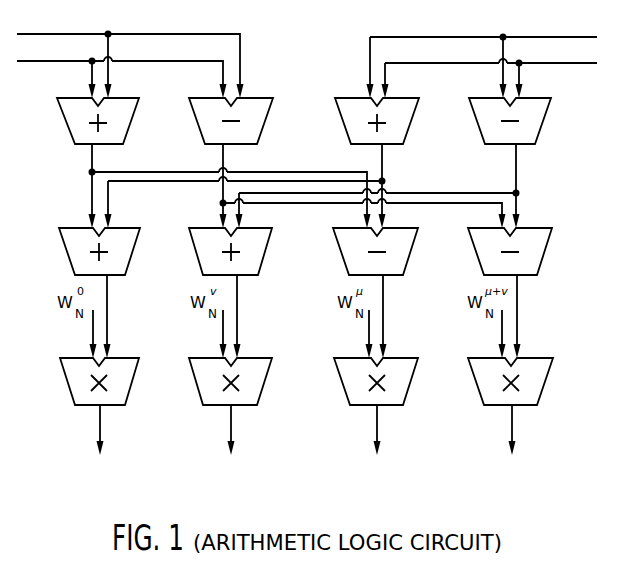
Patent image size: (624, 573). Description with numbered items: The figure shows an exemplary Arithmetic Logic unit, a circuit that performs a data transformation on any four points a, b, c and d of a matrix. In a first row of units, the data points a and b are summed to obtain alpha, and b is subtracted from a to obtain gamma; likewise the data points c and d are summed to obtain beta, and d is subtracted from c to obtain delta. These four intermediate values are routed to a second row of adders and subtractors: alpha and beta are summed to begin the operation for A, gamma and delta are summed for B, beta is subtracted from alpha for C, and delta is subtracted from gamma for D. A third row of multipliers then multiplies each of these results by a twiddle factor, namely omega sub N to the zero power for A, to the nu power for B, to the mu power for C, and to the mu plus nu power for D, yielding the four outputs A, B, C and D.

The data point a is at (130, 56).
The data point b is at (122, 69).
The data point c is at (482, 59).
The data point d is at (490, 72).
The output A is at (100, 445).
The output B is at (231, 445).
The output C is at (377, 445).
The output D is at (512, 445).